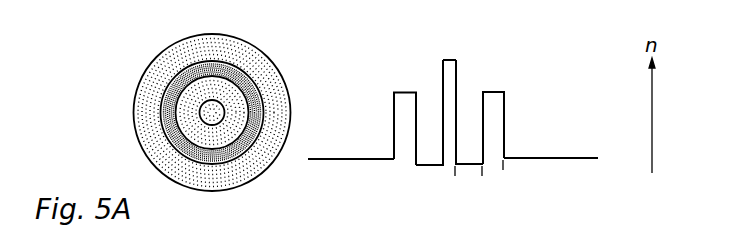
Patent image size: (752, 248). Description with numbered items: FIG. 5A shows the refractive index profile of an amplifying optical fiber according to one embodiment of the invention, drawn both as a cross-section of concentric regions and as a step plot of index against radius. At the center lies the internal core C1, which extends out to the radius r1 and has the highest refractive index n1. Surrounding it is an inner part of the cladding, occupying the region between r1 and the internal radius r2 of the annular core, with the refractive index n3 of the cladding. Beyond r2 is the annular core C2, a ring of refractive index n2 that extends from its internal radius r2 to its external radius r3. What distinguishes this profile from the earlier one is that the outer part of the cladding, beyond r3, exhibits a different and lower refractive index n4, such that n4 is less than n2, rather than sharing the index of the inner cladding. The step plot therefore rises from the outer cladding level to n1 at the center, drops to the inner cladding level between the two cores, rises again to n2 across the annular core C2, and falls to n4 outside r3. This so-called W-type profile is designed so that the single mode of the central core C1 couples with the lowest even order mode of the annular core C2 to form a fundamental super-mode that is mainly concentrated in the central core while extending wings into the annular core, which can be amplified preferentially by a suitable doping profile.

The internal core C1 is at (450, 58).
The annular core C2 is at (406, 90).
The refractive index of the internal core n1 is at (462, 58).
The refractive index of the annular core n2 is at (469, 154).
The refractive index of the cladding n3 is at (514, 96).
The refractive index of the outer part of the cladding n4 is at (558, 147).
The radius of the internal core r1 is at (458, 184).
The internal radius of the annular core r2 is at (485, 184).
The external radius of the annular core r3 is at (505, 178).